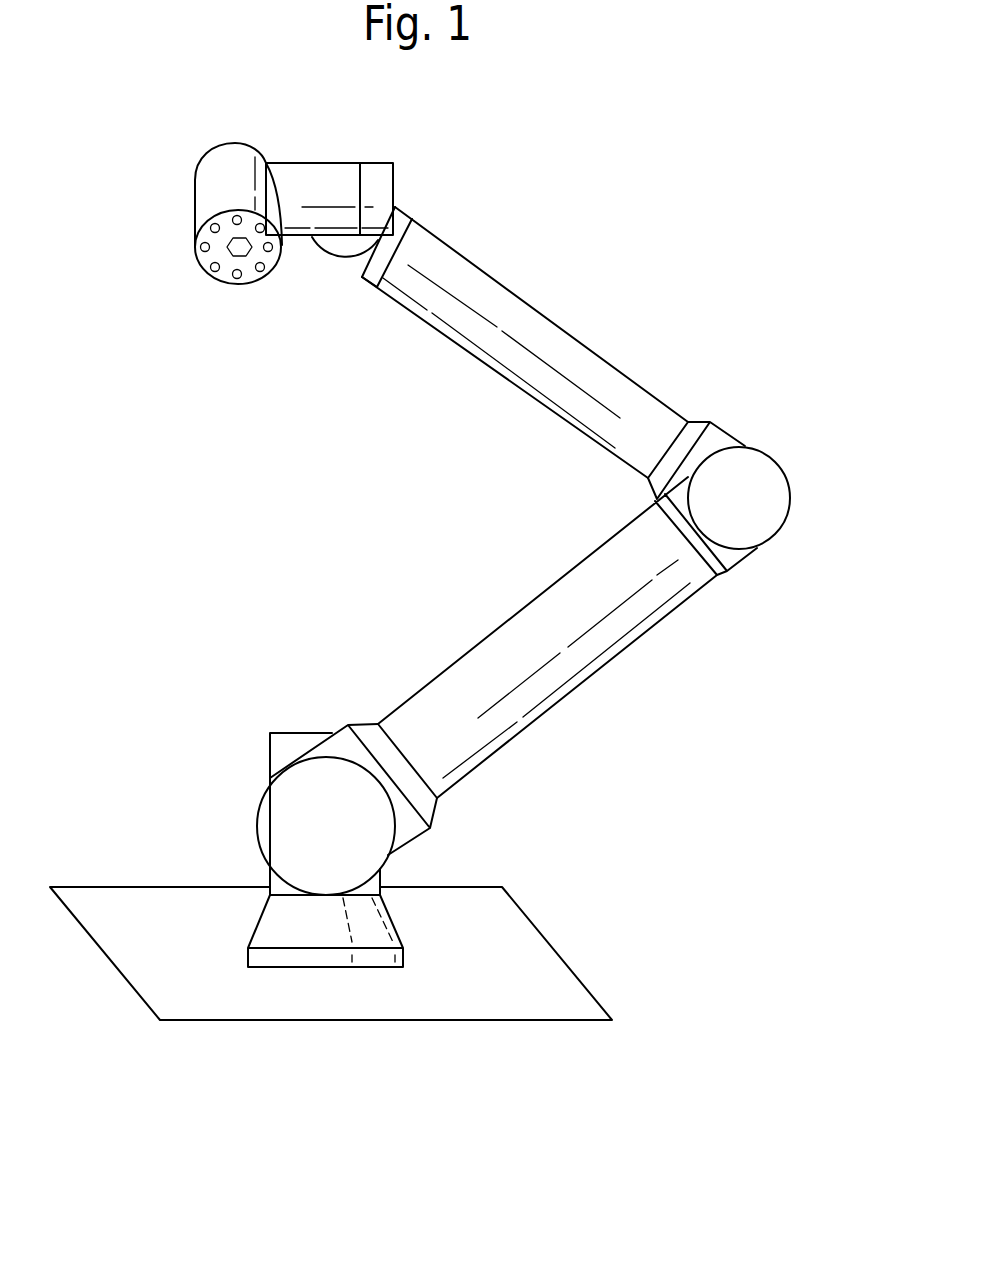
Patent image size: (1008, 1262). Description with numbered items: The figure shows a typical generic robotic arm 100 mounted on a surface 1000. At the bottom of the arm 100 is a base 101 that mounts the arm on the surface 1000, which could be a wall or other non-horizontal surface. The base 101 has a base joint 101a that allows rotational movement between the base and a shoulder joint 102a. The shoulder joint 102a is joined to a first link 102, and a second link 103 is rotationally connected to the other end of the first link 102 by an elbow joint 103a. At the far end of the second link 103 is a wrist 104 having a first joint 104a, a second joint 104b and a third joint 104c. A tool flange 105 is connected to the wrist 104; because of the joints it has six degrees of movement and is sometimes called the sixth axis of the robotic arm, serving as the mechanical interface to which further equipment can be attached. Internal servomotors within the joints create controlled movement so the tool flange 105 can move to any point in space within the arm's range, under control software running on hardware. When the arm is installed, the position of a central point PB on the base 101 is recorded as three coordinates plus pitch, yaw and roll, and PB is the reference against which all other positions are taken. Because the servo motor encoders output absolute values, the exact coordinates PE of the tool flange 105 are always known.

The arm 100 is at (712, 274).
The base 101 is at (268, 922).
The base joint 101a is at (365, 887).
The first link 102 is at (472, 670).
The shoulder joint 102a is at (282, 808).
The second link 103 is at (512, 378).
The elbow joint 103a is at (758, 523).
The wrist 104 is at (207, 187).
The first joint 104a is at (410, 213).
The second joint 104b is at (353, 173).
The third joint 104c is at (208, 238).
The tool flange 105 is at (220, 282).
The coordinates of the tool flange PE is at (241, 254).
The central point on the base PB is at (323, 958).
The surface 1000 is at (567, 980).